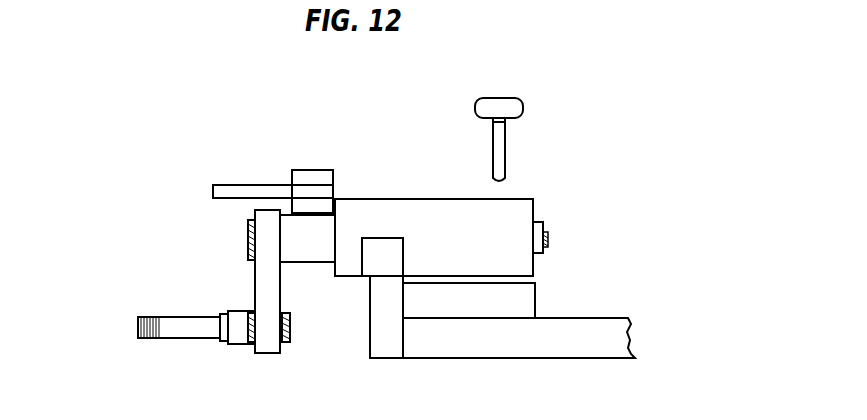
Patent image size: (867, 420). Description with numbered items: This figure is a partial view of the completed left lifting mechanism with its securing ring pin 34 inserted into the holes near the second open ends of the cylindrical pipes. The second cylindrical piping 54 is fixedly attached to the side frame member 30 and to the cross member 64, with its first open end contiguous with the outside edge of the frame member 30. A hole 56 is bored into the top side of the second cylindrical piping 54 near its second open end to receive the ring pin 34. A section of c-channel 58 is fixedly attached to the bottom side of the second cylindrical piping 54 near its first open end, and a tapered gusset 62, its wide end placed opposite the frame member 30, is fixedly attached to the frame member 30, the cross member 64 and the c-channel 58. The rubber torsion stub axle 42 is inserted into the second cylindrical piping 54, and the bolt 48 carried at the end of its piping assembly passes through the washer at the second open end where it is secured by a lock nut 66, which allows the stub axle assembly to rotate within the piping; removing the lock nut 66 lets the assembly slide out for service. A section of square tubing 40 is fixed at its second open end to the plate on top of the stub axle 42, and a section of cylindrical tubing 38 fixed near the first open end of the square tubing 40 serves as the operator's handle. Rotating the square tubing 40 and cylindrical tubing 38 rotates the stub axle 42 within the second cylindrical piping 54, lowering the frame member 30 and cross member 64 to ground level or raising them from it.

The frame member 30 is at (390, 338).
The ring pin 34 is at (507, 152).
The cylindrical tubing 38 is at (240, 197).
The square tubing 40 is at (312, 178).
The rubber torsion stub axle 42 is at (267, 293).
The bolt 48 is at (547, 233).
The second cylindrical piping 54 is at (437, 235).
The hole 56 is at (503, 198).
The c-channel 58 is at (365, 280).
The tapered gusset 62 is at (512, 302).
The cross member 64 is at (560, 360).
The lock nut 66 is at (543, 257).